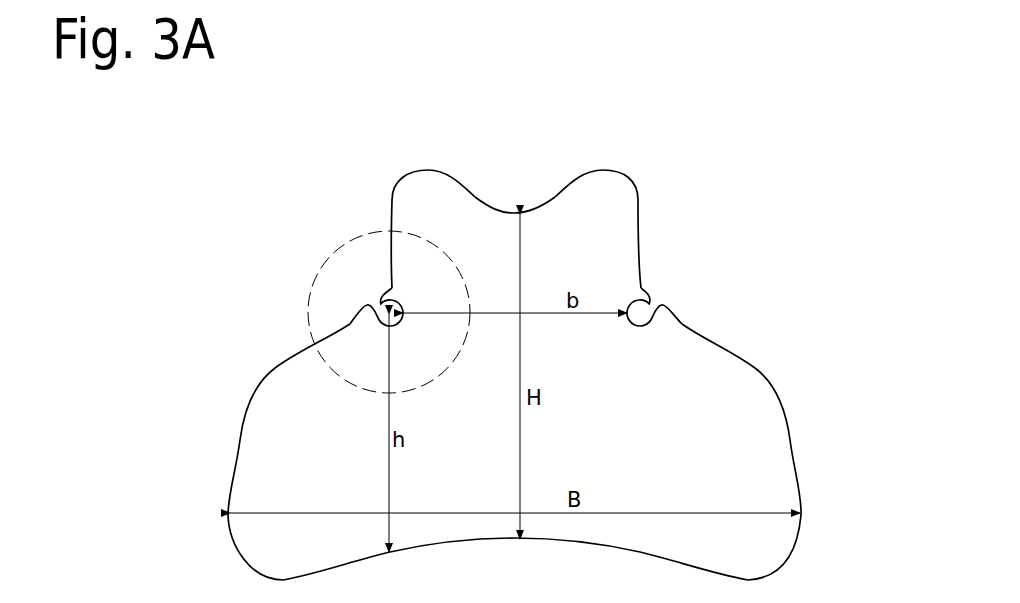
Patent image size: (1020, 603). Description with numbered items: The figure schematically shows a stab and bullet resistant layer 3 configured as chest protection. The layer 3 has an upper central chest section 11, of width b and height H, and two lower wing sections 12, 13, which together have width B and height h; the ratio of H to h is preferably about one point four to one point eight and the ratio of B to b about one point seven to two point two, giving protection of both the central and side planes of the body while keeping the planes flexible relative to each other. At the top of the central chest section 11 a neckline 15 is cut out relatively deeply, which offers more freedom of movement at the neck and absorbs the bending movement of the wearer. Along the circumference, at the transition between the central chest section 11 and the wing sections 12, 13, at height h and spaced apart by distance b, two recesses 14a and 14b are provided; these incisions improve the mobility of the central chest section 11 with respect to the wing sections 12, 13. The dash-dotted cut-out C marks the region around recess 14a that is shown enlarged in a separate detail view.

The stab and bullet resistant layer 3 is at (774, 342).
The central chest section 11 is at (652, 142).
The wing section 12 is at (383, 142).
The wing section 13 is at (813, 142).
The recess 14a is at (371, 292).
The recess 14b is at (661, 296).
The neckline 15 is at (510, 199).
The cut-out C is at (310, 325).